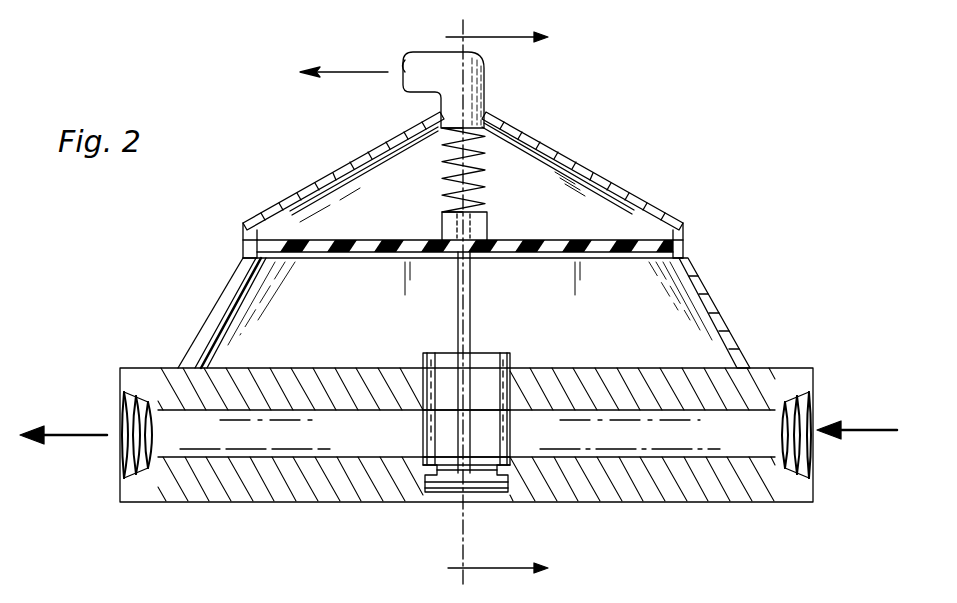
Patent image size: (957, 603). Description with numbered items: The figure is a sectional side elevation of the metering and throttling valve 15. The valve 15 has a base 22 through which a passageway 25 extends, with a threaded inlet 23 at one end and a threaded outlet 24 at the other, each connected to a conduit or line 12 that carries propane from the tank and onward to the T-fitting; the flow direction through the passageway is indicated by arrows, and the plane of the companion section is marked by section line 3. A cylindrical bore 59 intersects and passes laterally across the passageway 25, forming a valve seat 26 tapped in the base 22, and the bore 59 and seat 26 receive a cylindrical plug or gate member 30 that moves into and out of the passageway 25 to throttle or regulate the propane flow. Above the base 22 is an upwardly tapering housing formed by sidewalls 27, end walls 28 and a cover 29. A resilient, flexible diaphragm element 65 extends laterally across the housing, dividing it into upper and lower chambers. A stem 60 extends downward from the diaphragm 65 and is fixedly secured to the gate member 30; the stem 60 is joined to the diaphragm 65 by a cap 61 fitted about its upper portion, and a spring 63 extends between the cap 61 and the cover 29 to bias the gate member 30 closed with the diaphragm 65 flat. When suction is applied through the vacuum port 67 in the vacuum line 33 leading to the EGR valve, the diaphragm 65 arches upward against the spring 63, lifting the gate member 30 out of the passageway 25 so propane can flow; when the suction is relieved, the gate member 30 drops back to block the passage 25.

The section line 3- 3 is at (483, 302).
The conduit 12 is at (85, 436).
The metering and throttling valve 15 is at (760, 182).
The base 22 is at (692, 372).
The threaded inlet 23 is at (816, 408).
The threaded outlet 24 is at (119, 410).
The passageway 25 is at (280, 442).
The valve seat 26 is at (479, 500).
The sidewalls 27 is at (583, 229).
The end walls 28 is at (229, 292).
The cover 29 is at (348, 168).
The gate member 30 is at (491, 353).
The vacuum line 33 is at (343, 72).
The cylindrical bore 59 is at (422, 368).
The stem 60 is at (470, 297).
The cap 61 is at (481, 222).
The spring 63 is at (450, 158).
The diaphragm element 65 is at (270, 222).
The vacuum port 67 is at (478, 88).